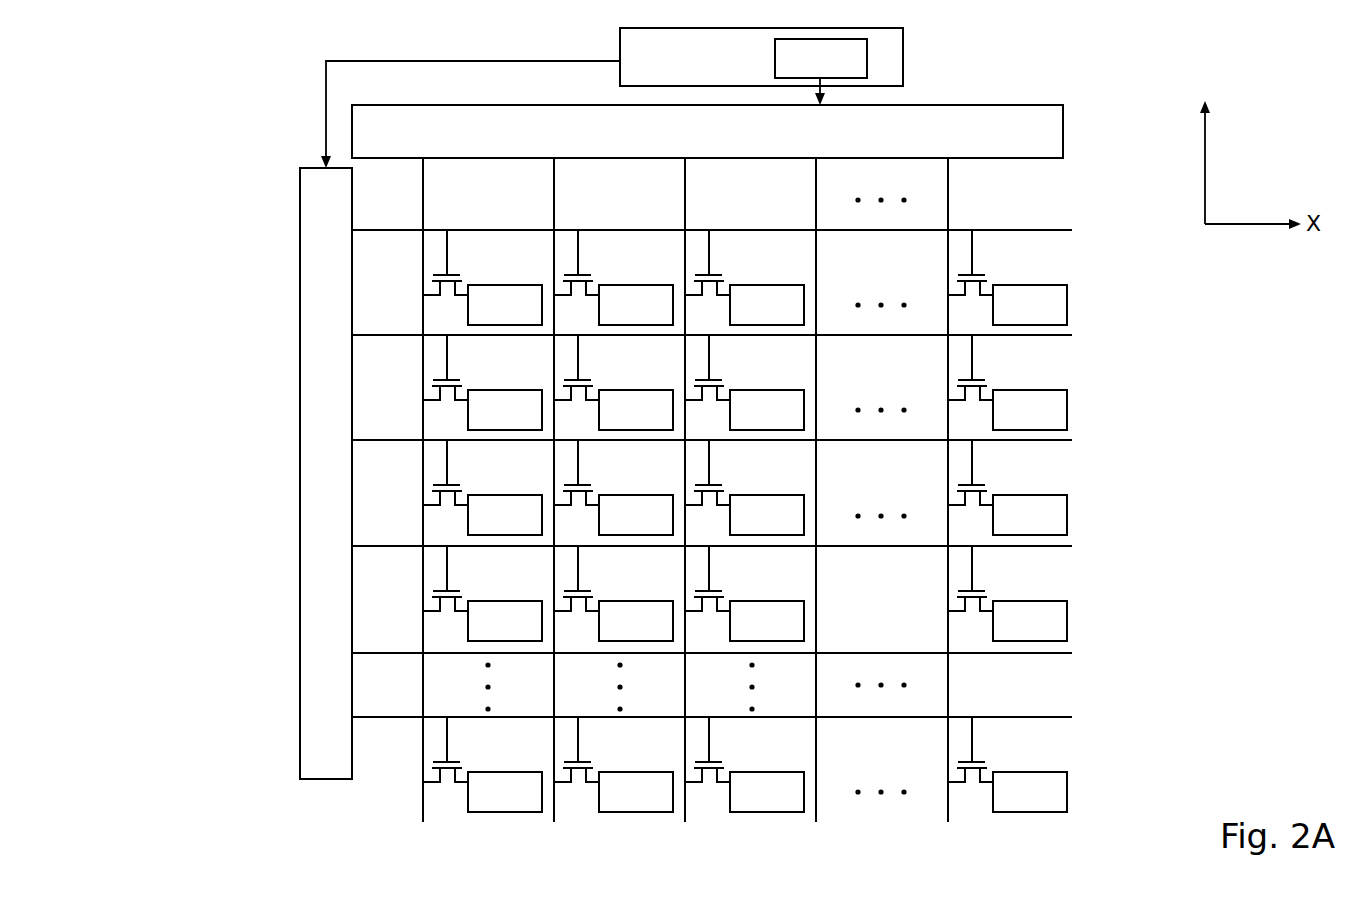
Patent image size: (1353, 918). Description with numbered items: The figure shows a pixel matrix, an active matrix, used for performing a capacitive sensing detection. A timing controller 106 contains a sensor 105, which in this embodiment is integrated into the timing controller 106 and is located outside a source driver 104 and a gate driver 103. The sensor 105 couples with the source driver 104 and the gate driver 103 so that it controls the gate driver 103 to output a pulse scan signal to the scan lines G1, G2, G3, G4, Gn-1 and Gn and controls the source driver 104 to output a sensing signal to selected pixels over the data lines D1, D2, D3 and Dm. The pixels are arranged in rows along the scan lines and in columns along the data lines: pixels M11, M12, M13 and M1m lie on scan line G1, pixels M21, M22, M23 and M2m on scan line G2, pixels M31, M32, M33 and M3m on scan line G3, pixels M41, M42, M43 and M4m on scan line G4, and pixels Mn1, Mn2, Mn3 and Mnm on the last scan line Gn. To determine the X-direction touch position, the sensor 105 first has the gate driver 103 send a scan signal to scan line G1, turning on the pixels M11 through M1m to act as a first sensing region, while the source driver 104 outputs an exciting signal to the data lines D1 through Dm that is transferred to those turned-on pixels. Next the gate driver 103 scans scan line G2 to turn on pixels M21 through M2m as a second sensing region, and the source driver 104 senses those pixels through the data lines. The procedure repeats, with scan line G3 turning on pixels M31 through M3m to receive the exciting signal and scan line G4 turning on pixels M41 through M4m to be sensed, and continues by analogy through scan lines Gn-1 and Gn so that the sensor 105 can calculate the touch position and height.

The gate driver 103 is at (299, 192).
The source driver 104 is at (1066, 134).
The sensor 105 is at (868, 55).
The timing controller 106 is at (904, 52).
The data line D1 is at (428, 188).
The data line D2 is at (559, 188).
The data line D3 is at (690, 188).
The data line Dm is at (951, 188).
The scan line G1 is at (393, 233).
The scan line G2 is at (393, 338).
The scan line G3 is at (393, 443).
The scan line G4 is at (393, 549).
The scan line Gn-1 is at (393, 656).
The scan line Gn is at (393, 720).
The pixel M11 is at (505, 285).
The pixel M12 is at (636, 285).
The pixel M13 is at (767, 285).
The pixel M1m is at (1030, 285).
The pixel M21 is at (505, 390).
The pixel M22 is at (636, 390).
The pixel M23 is at (767, 390).
The pixel M2m is at (1030, 390).
The pixel M31 is at (505, 495).
The pixel M32 is at (636, 495).
The pixel M33 is at (767, 495).
The pixel M3m is at (1030, 495).
The pixel M41 is at (505, 601).
The pixel M42 is at (636, 601).
The pixel M43 is at (767, 601).
The pixel M4m is at (1030, 601).
The pixel Mn1 is at (505, 772).
The pixel Mn2 is at (636, 772).
The pixel Mn3 is at (767, 772).
The pixel Mnm is at (1030, 772).